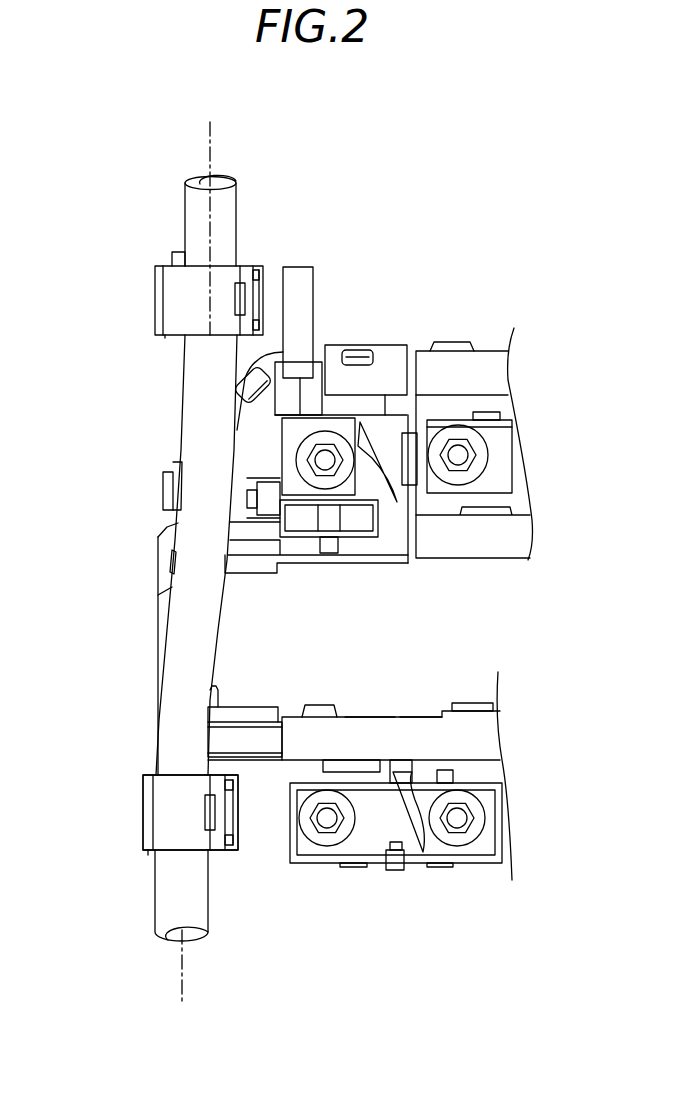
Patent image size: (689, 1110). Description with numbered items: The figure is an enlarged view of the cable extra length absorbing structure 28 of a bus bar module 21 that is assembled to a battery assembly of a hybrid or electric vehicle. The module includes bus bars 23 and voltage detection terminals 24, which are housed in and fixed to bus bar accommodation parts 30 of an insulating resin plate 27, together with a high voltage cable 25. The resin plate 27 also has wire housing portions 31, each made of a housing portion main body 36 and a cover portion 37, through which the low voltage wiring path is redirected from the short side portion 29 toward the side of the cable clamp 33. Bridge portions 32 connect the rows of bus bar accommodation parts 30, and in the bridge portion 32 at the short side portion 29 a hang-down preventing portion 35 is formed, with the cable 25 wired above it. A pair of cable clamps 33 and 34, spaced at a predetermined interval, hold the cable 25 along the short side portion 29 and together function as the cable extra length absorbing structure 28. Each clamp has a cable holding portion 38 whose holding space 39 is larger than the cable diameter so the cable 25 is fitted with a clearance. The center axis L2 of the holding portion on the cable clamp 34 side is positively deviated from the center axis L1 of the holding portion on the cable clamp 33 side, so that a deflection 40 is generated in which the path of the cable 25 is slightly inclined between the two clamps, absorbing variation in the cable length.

The bus bar module 21 is at (531, 234).
The bus bar 23 is at (370, 833).
The voltage detection terminal 24 is at (417, 842).
The high voltage cable 25 is at (230, 208).
The resin plate 27 is at (415, 712).
The cable extra length absorbing structure 28 is at (76, 204).
The short side portion 29 is at (158, 572).
The bus bar accommodation part 30 is at (506, 840).
The wire housing portion 31 is at (472, 735).
The bridge portion 32 is at (162, 617).
The cable clamp 33 is at (153, 322).
The cable clamp 34 is at (146, 838).
The hang-down preventing portion 35 is at (193, 487).
The housing portion main body 36 is at (370, 720).
The cover portion 37 is at (322, 726).
The cable holding portion 38 is at (190, 289).
The holding space 39 is at (165, 340).
The deflection 40 is at (187, 527).
The center axis L1 is at (212, 135).
The center axis L2 is at (190, 967).